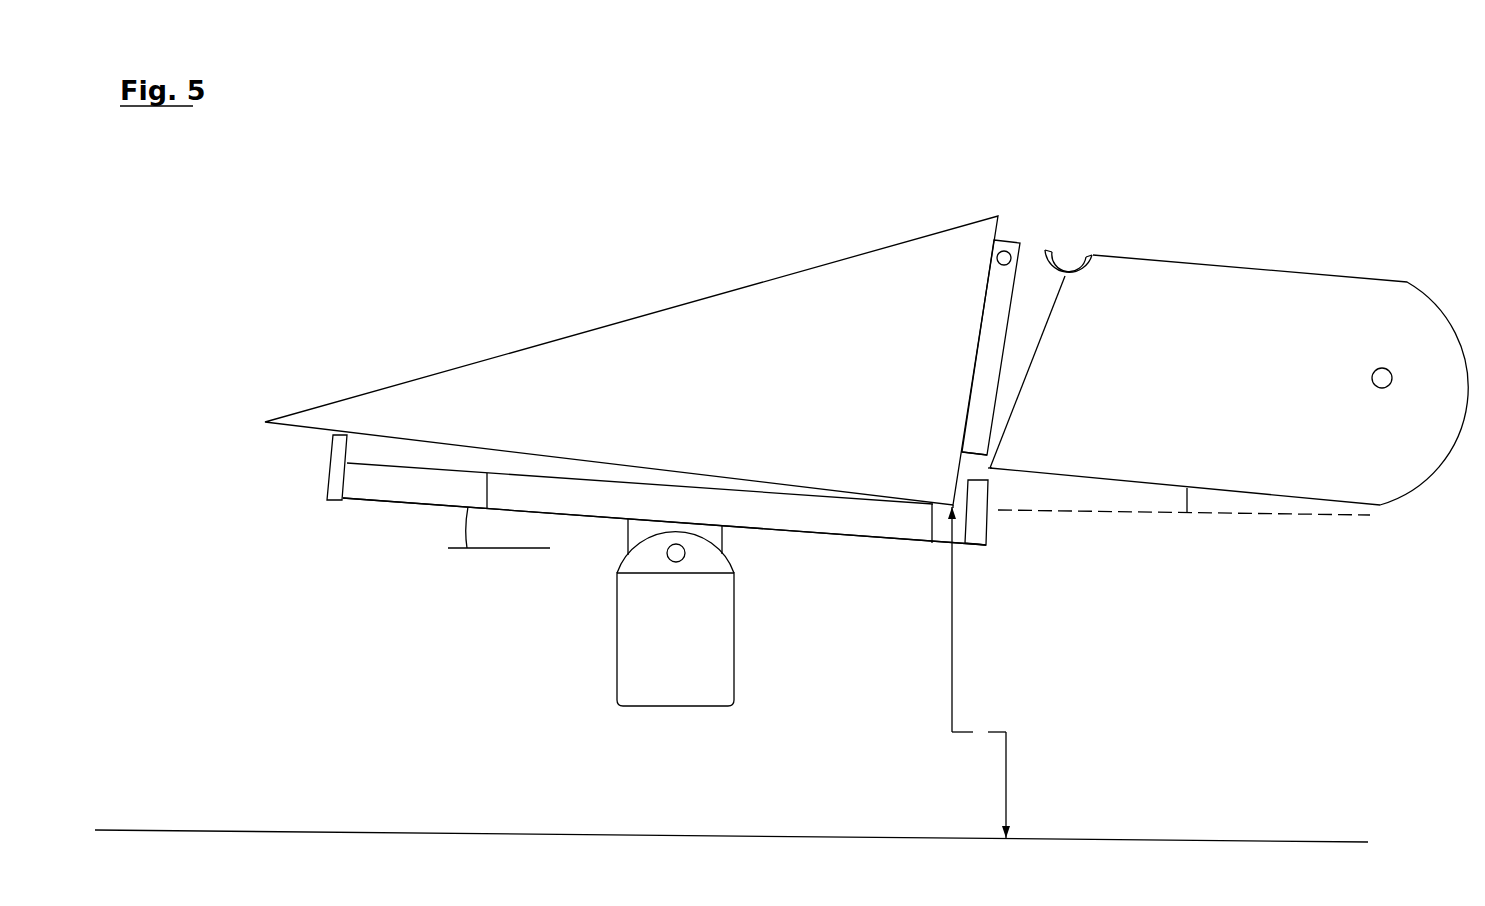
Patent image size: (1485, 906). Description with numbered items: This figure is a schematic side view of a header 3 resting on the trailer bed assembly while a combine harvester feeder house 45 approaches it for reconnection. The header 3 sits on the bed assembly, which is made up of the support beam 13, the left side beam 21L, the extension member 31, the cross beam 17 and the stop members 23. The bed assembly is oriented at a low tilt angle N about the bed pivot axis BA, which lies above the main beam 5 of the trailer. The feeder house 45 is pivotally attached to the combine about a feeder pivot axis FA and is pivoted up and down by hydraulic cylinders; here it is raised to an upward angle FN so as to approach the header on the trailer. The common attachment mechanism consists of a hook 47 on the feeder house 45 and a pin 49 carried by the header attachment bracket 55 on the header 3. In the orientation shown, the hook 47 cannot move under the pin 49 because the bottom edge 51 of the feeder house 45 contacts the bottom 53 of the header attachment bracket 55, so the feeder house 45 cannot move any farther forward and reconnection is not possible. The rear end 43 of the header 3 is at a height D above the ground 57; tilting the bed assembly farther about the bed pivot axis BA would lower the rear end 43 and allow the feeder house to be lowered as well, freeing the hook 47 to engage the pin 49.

The header 3 is at (631, 360).
The support beam 13 is at (259, 476).
The extension member 31 is at (624, 535).
The cross beam 17 is at (664, 561).
The tilt angle N is at (485, 527).
The bed pivot axis BA is at (625, 544).
The main beam 5 is at (675, 612).
The rear end of the header 43 is at (898, 476).
The left side beam 21L is at (878, 538).
The stop members 23 is at (1015, 561).
The bottom of the header attachment bracket 53 is at (913, 409).
The bottom edge of the feeder house 51 is at (1031, 439).
The header attachment bracket 55 is at (963, 347).
The pin 49 is at (1042, 229).
The hook 47 is at (1072, 335).
The feeder house 45 is at (1229, 354).
The feeder pivot axis FA is at (1356, 347).
The upward angle of the feeder house FN is at (1184, 501).
The height above the ground D is at (979, 672).
The ground 57 is at (731, 805).